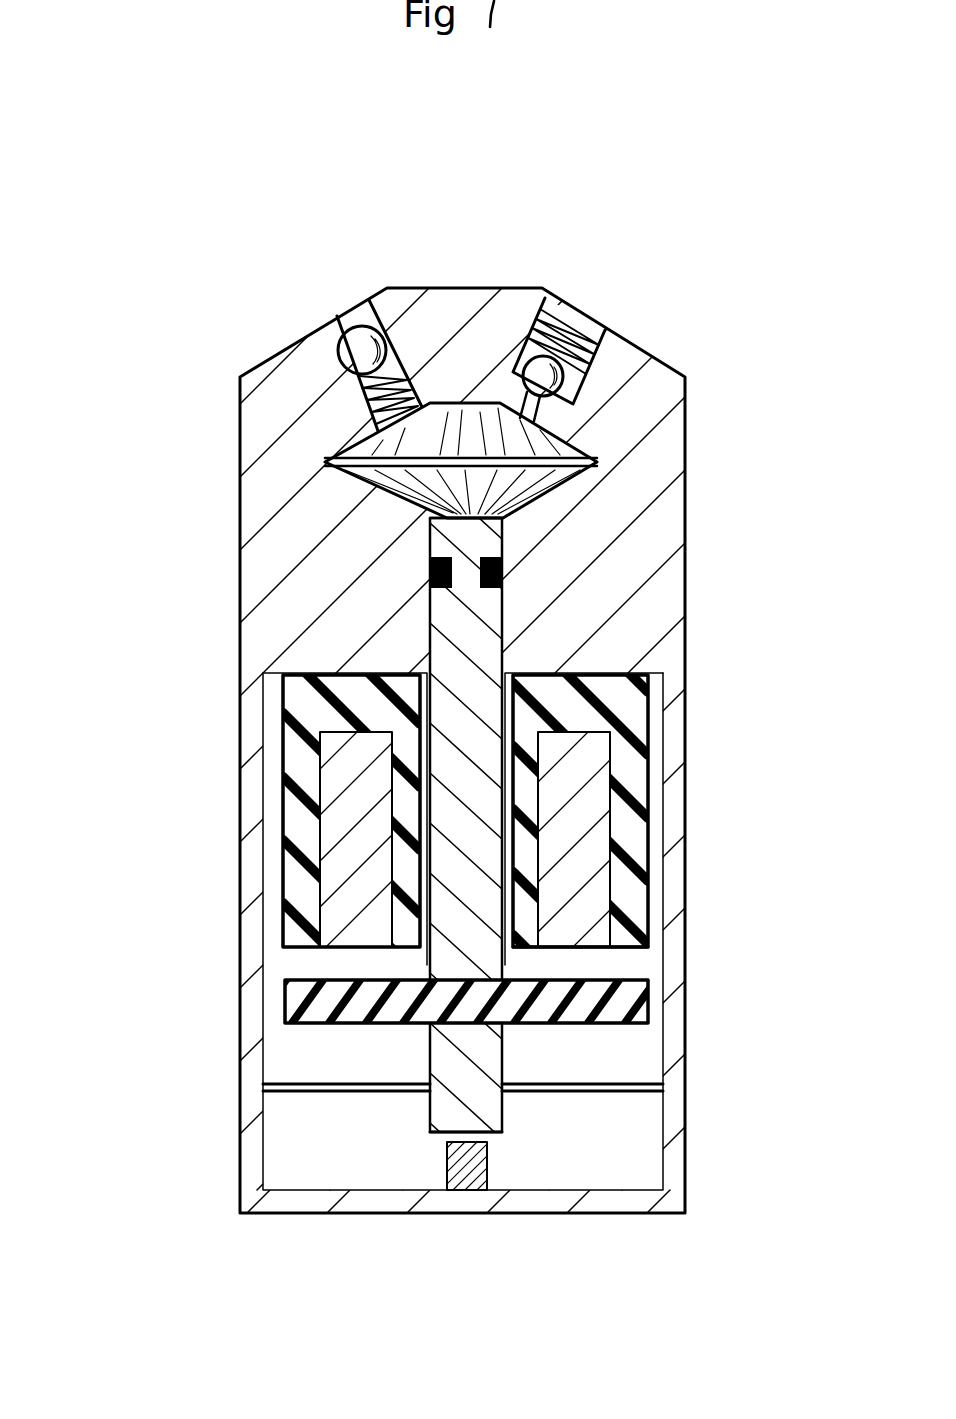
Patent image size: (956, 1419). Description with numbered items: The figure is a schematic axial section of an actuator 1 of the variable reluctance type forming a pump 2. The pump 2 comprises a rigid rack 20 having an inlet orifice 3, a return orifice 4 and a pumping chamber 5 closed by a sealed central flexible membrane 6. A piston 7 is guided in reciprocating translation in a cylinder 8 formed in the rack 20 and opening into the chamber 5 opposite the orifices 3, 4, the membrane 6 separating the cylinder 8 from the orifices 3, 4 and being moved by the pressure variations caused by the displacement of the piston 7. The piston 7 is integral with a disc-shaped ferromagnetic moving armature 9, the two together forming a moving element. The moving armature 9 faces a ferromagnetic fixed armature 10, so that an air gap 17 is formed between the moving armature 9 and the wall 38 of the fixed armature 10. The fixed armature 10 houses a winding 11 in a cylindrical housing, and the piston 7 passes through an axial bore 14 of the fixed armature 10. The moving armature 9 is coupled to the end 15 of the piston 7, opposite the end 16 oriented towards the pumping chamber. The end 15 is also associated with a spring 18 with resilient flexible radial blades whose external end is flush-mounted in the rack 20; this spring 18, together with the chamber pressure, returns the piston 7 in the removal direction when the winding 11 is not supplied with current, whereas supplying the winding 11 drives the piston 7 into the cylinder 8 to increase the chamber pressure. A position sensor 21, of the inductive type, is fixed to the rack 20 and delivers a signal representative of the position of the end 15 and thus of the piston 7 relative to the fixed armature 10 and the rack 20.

The actuator 1 is at (178, 843).
The pump 2 is at (231, 361).
The inlet orifice 3 is at (340, 318).
The return orifice 4 is at (570, 297).
The pumping chamber 5 is at (580, 400).
The flexible membrane 6 is at (563, 443).
The piston 7 is at (445, 612).
The cylinder 8 is at (507, 606).
The moving armature 9 is at (625, 997).
The fixed armature 10 is at (620, 703).
The winding 11 is at (567, 793).
The axial bore 14 is at (513, 860).
The end of the piston 15 is at (457, 1083).
The end of the piston 16 is at (470, 540).
The air gap 17 is at (553, 960).
The spring 18 is at (563, 1083).
The rack 20 is at (673, 1138).
The position sensor 21 is at (460, 1173).
The wall of the fixed armature 38 is at (600, 950).